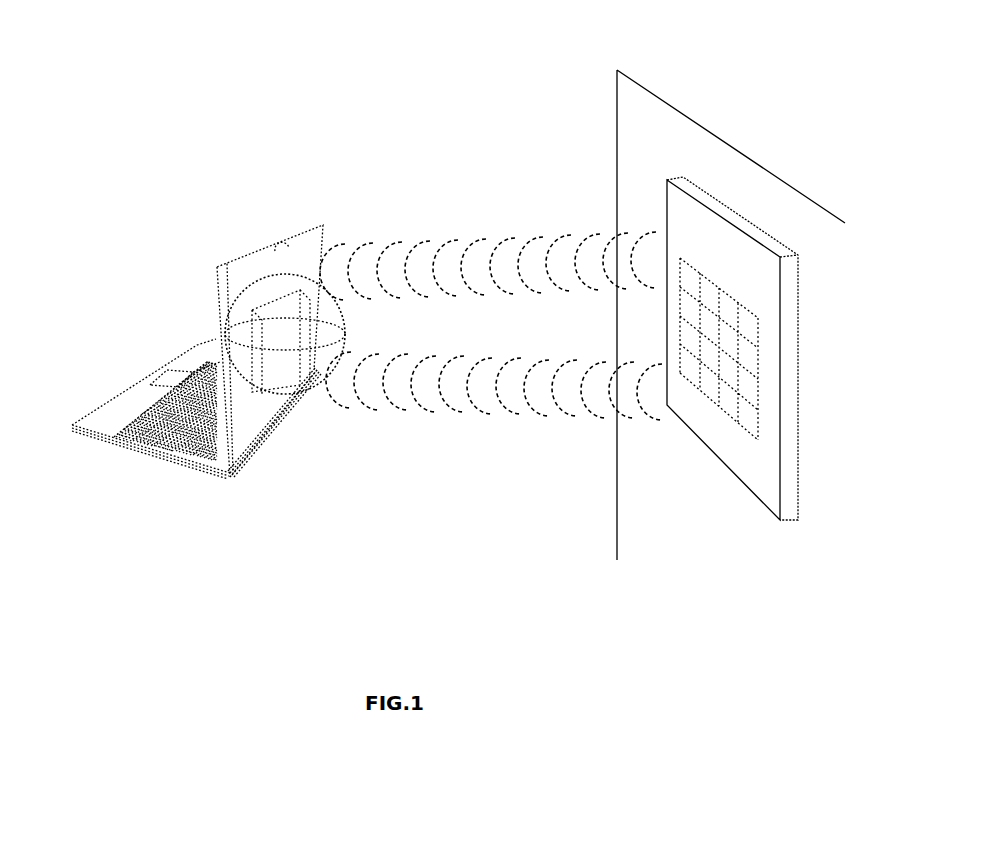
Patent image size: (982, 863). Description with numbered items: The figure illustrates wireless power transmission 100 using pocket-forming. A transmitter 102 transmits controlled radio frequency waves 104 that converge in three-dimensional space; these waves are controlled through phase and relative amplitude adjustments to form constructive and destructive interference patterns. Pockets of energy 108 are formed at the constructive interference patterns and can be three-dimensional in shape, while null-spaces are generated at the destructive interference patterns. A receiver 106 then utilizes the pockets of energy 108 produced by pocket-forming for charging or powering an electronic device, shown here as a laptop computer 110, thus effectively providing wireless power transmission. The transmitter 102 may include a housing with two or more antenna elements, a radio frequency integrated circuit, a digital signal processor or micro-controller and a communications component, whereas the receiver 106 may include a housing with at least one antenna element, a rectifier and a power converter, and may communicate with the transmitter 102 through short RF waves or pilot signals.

The wireless power transmission 100 is at (150, 86).
The transmitter 102 is at (722, 207).
The radio frequency waves 104 is at (488, 240).
The receiver 106 is at (267, 365).
The pockets of energy 108 is at (255, 277).
The laptop computer 110 is at (319, 226).